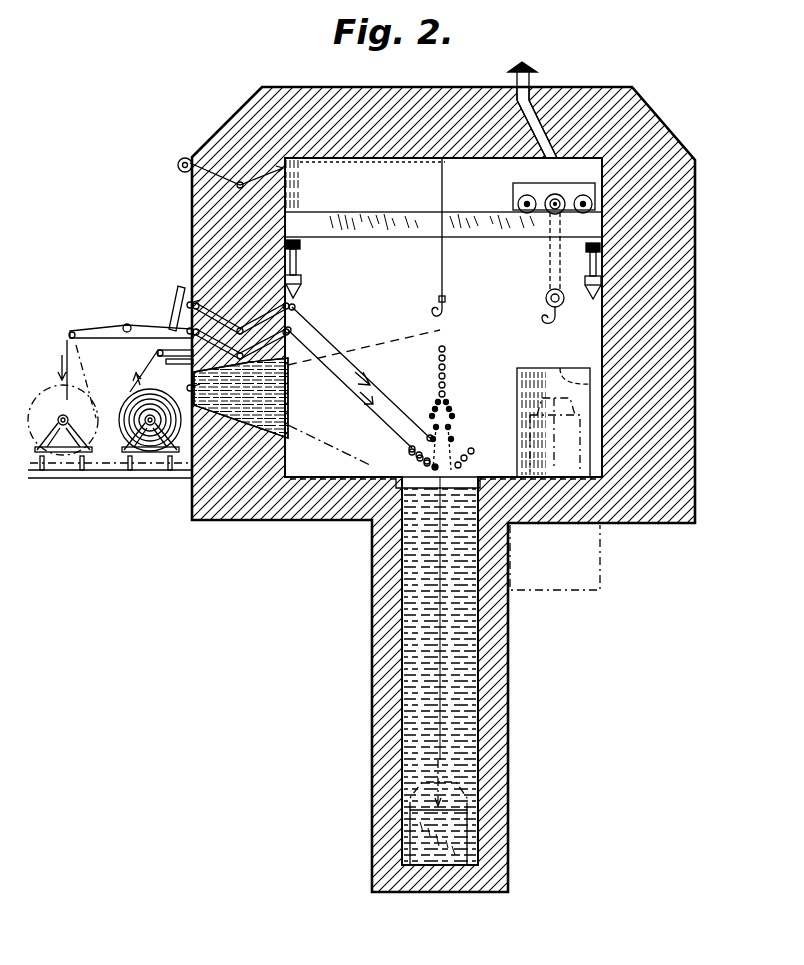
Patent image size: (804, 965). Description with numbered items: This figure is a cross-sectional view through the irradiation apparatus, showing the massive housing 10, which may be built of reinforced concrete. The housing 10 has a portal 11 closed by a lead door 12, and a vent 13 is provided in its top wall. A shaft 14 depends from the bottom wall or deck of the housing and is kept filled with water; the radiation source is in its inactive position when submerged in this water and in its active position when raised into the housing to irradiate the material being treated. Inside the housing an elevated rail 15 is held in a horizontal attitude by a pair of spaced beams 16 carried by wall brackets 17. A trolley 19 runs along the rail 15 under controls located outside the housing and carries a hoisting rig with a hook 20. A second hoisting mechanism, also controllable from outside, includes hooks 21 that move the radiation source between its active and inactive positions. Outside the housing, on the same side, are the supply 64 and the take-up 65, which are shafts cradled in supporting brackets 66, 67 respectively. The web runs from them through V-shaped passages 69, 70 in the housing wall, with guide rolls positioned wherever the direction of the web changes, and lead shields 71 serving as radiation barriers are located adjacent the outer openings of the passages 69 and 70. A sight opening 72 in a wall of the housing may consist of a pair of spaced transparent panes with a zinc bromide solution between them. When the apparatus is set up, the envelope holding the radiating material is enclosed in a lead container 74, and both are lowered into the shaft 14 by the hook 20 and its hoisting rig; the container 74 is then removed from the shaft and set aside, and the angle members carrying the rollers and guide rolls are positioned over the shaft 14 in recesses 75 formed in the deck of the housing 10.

The housing 10 is at (233, 126).
The portal 11 is at (578, 378).
The lead door 12 is at (520, 392).
The vent 13 is at (533, 80).
The shaft 14 is at (508, 746).
The elevated rail 15 is at (402, 214).
The beams 16 is at (298, 259).
The wall brackets 17 is at (298, 284).
The trolley 19 is at (512, 190).
The hook 20 is at (548, 318).
The hooks 21 is at (446, 312).
The supply 64 is at (128, 402).
The take-up 65 is at (52, 392).
The supporting bracket 66 is at (150, 452).
The supporting bracket 67 is at (64, 452).
The V-shaped passage 69 is at (289, 386).
The V-shaped passage 70 is at (288, 316).
The lead shields 71 is at (178, 296).
The sight opening 72 is at (293, 412).
The lead container 74 is at (540, 440).
The recesses 75 is at (376, 475).